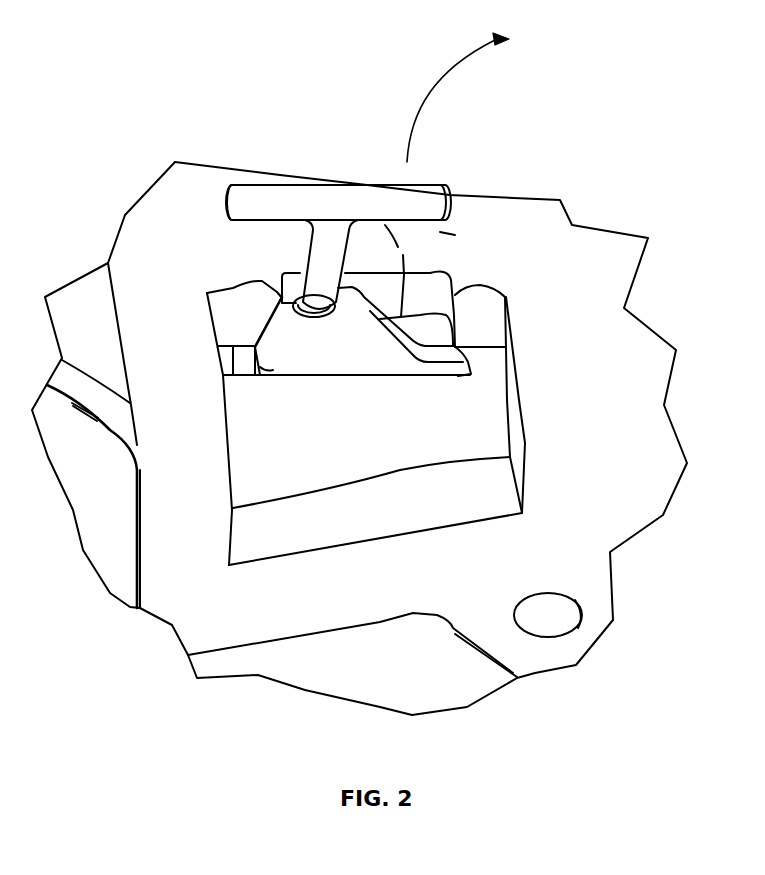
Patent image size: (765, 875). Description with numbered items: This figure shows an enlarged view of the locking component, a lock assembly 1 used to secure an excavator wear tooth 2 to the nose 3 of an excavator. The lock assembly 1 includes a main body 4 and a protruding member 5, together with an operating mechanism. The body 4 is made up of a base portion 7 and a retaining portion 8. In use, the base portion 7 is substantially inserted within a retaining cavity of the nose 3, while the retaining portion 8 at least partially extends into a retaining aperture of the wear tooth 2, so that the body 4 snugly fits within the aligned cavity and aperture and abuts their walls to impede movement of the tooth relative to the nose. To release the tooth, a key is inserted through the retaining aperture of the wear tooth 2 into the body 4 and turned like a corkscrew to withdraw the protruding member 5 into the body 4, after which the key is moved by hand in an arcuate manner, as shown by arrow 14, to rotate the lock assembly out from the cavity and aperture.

The lock assembly 1 is at (242, 394).
The excavator wear tooth 2 is at (391, 397).
The nose 3 is at (314, 470).
The main body 4 is at (405, 338).
The protruding member 5 is at (250, 362).
The base portion 7 is at (440, 370).
The retaining portion 8 is at (372, 317).
The arrow 14 is at (430, 72).